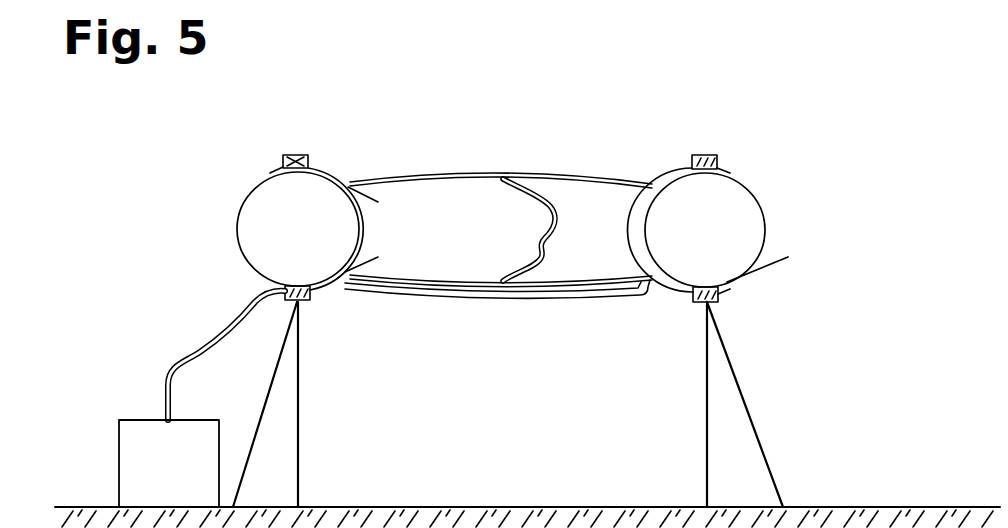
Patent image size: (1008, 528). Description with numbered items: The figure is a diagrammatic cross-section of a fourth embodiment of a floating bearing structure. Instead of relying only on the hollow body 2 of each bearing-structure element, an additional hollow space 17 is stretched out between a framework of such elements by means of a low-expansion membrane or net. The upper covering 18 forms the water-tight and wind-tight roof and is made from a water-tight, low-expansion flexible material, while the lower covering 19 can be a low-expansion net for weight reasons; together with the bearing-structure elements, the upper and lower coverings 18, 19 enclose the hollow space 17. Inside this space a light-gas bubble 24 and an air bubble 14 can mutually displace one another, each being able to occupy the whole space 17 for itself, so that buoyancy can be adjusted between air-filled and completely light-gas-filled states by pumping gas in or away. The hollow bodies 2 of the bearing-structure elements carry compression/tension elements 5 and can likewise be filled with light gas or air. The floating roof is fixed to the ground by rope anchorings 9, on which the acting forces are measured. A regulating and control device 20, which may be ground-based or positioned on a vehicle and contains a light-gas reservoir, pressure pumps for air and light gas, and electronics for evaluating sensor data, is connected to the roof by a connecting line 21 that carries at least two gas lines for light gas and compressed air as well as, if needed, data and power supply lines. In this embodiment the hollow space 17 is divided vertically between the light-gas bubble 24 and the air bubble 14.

The hollow body 2 is at (270, 208).
The compression/tension element 5 is at (288, 155).
The rope anchoring 9 is at (742, 397).
The air bubble 14 is at (585, 177).
The hollow space 17 is at (477, 150).
The upper covering 18 is at (508, 173).
The lower covering 19 is at (483, 280).
The regulating and control device 20 is at (152, 452).
The connecting line 21 is at (228, 333).
The light-gas bubble 24 is at (400, 178).